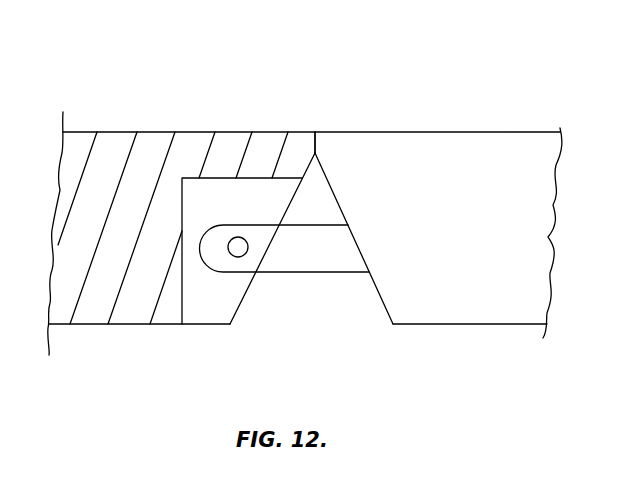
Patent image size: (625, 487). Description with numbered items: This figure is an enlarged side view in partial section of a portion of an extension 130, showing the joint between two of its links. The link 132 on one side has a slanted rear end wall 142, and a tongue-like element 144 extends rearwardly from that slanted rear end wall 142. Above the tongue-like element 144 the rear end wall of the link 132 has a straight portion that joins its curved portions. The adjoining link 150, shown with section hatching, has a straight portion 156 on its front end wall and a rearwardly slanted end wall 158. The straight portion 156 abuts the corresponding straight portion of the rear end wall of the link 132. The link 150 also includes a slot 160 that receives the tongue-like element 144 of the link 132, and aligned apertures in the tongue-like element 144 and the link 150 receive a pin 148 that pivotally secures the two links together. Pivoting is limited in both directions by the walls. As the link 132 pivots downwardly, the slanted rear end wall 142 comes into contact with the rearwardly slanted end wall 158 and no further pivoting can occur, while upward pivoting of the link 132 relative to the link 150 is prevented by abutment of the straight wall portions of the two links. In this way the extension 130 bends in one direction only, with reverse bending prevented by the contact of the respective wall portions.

The extension 130 is at (393, 87).
The link 132 is at (470, 132).
The slanted rear end wall 142 is at (386, 309).
The tongue-like element 144 is at (297, 272).
The pin 148 is at (240, 237).
The link 150 is at (135, 132).
The straight portion 156 is at (363, 78).
The rearwardly slanted end wall 158 is at (240, 307).
The slot 160 is at (182, 300).